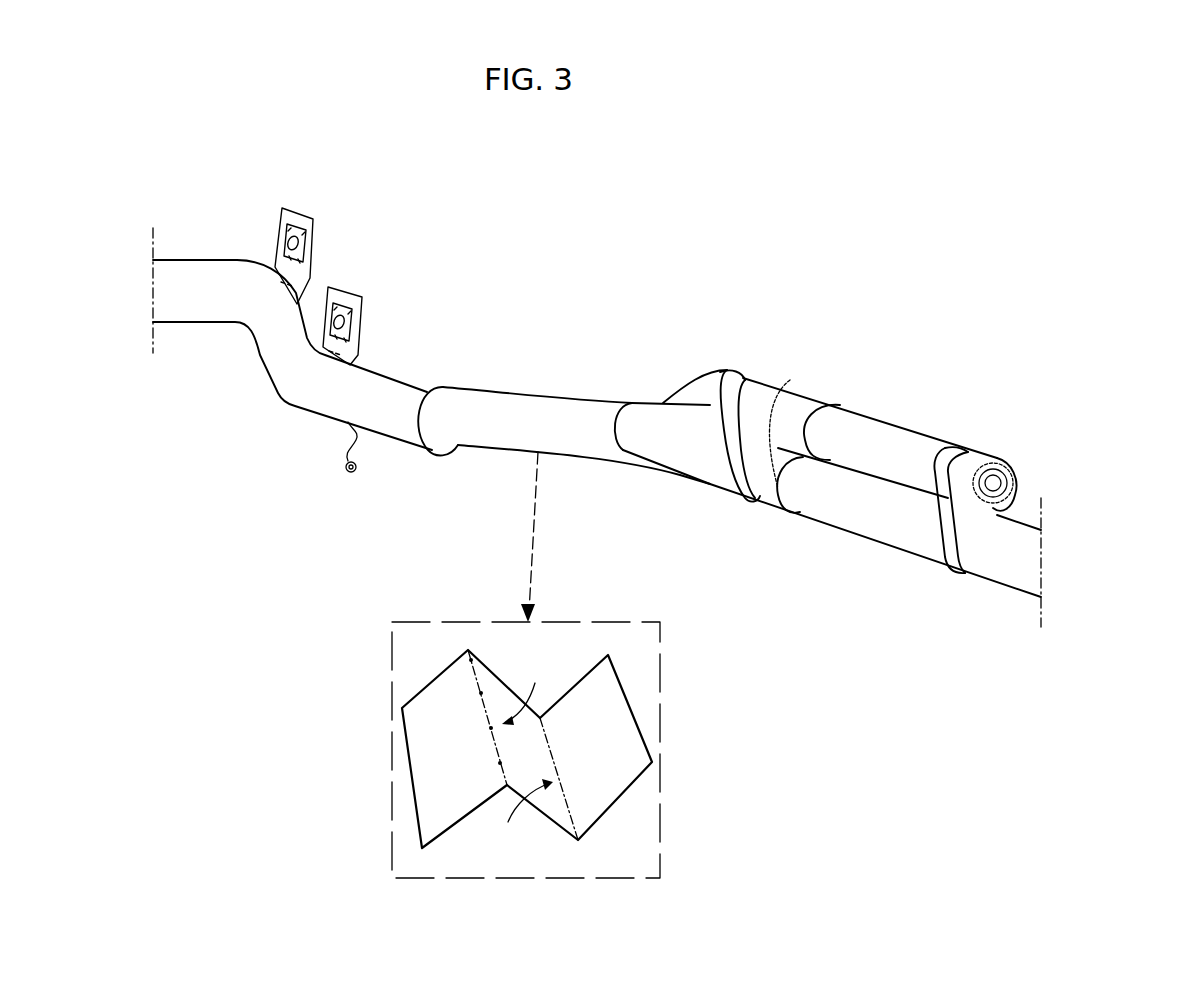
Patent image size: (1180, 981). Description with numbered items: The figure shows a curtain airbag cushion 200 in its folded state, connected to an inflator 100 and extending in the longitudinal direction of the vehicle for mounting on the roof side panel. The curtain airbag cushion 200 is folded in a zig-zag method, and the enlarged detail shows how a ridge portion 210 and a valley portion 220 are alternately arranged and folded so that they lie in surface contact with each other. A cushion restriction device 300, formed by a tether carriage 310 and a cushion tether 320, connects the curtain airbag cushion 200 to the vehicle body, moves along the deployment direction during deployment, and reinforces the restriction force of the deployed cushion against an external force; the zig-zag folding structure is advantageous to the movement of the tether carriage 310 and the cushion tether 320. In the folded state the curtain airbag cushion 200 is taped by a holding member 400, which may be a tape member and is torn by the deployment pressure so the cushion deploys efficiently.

The inflator 100 is at (893, 443).
The curtain airbag cushion 200 is at (467, 405).
The ridge portion 210 is at (487, 715).
The valley portion 220 is at (553, 755).
The cushion restriction device 300 is at (301, 490).
The tether carriage 310 is at (326, 470).
The cushion tether 320 is at (345, 445).
The holding member 400 is at (733, 400).